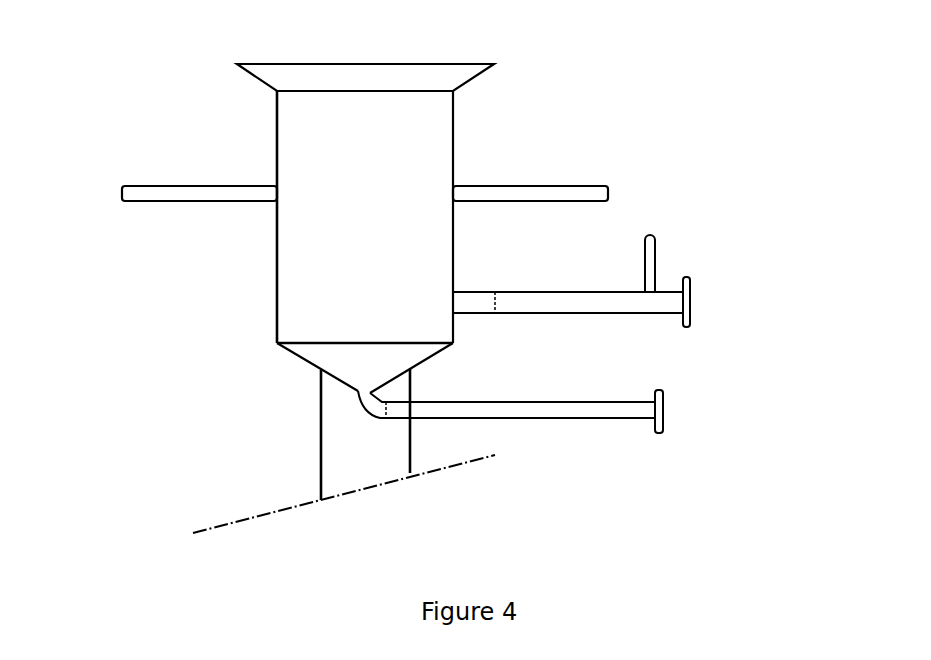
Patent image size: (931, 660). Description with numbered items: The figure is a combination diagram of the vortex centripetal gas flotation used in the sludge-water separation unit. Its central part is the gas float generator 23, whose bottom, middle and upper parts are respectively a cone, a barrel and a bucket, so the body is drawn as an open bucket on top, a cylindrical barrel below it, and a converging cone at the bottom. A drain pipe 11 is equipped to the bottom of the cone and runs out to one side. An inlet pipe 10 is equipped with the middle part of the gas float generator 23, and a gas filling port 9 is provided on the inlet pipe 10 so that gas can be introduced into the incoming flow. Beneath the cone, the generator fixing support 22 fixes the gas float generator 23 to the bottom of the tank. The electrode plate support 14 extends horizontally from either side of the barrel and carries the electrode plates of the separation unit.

The gas float generator 23 is at (338, 145).
The electrode plate support 14 is at (560, 193).
The gas filling port 9 is at (650, 258).
The inlet pipe 10 is at (672, 302).
The drain pipe 11 is at (663, 398).
The generator fixing support 22 is at (320, 423).